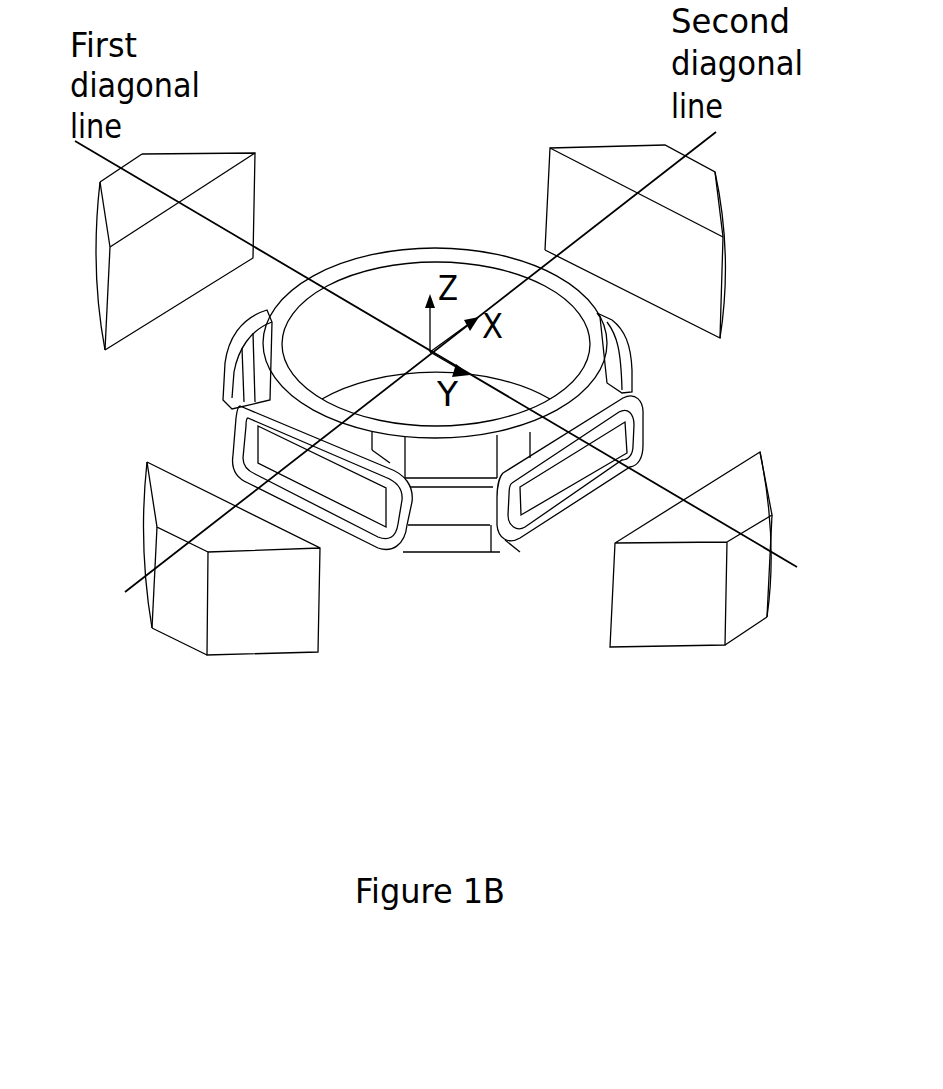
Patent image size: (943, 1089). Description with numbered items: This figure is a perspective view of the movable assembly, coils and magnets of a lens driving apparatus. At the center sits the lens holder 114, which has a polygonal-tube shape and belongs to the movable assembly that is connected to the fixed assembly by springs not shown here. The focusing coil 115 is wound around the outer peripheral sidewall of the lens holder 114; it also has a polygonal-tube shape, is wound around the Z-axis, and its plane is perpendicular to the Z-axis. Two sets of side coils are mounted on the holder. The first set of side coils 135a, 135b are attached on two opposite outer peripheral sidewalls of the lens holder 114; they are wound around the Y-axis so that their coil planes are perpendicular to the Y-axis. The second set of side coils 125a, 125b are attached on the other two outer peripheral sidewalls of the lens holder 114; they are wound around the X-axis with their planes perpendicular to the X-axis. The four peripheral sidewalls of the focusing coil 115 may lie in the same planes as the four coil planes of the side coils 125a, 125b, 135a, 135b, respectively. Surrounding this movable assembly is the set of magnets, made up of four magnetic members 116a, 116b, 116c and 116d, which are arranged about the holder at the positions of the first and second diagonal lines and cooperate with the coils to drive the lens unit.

The lens holder 114 is at (495, 285).
The focusing coil 115 is at (432, 508).
The magnetic member 116a is at (178, 223).
The magnetic member 116b is at (258, 640).
The magnetic member 116c is at (668, 613).
The magnetic member 116d is at (652, 225).
The side coil 125a is at (233, 447).
The side coil 125b is at (632, 350).
The side coil 135a is at (224, 371).
The side coil 135b is at (513, 546).